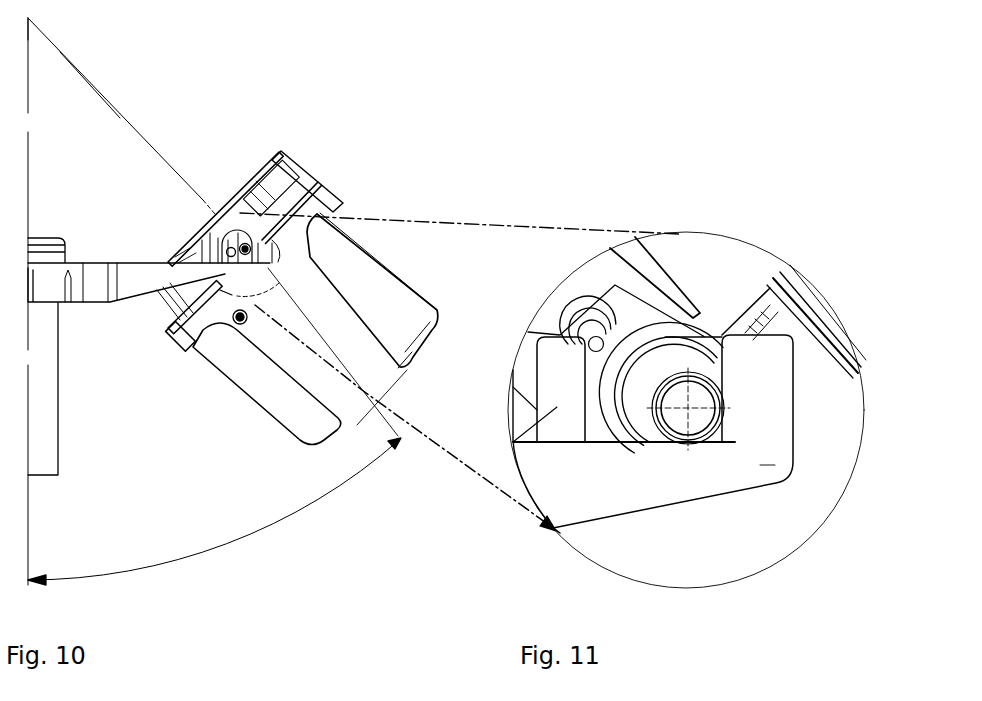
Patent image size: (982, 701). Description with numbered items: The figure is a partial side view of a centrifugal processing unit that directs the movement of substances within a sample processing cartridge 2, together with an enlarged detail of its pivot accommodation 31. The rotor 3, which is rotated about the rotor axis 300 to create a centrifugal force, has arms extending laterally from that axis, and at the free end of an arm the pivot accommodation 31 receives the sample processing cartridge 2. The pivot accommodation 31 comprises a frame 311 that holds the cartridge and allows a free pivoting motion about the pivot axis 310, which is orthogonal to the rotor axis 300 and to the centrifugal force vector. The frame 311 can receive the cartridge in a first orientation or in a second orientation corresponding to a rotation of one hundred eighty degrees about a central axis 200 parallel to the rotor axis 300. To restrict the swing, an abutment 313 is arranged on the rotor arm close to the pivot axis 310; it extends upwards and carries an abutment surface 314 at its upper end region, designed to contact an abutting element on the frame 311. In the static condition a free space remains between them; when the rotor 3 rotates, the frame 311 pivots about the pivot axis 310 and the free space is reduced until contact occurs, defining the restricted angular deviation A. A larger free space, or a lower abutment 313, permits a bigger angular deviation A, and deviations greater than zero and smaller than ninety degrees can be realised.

In FIG. 10, the sample processing cartridge 2 is at (370, 265).
In FIG. 10, the rotor 3 is at (45, 430).
In FIG. 10, the pivot accommodation 31 is at (291, 120).
In FIG. 11, the pivot accommodation 31 is at (788, 132).
In FIG. 10, the central axis 200 is at (140, 135).
In FIG. 10, the rotor axis 300 is at (28, 115).
In FIG. 11, the pivot axis 310 is at (700, 418).
In FIG. 10, the frame 311 is at (350, 407).
In FIG. 11, the abutment 313 is at (515, 444).
In FIG. 11, the abutment surface 314 is at (680, 300).
In FIG. 10, the angular deviation A is at (246, 536).